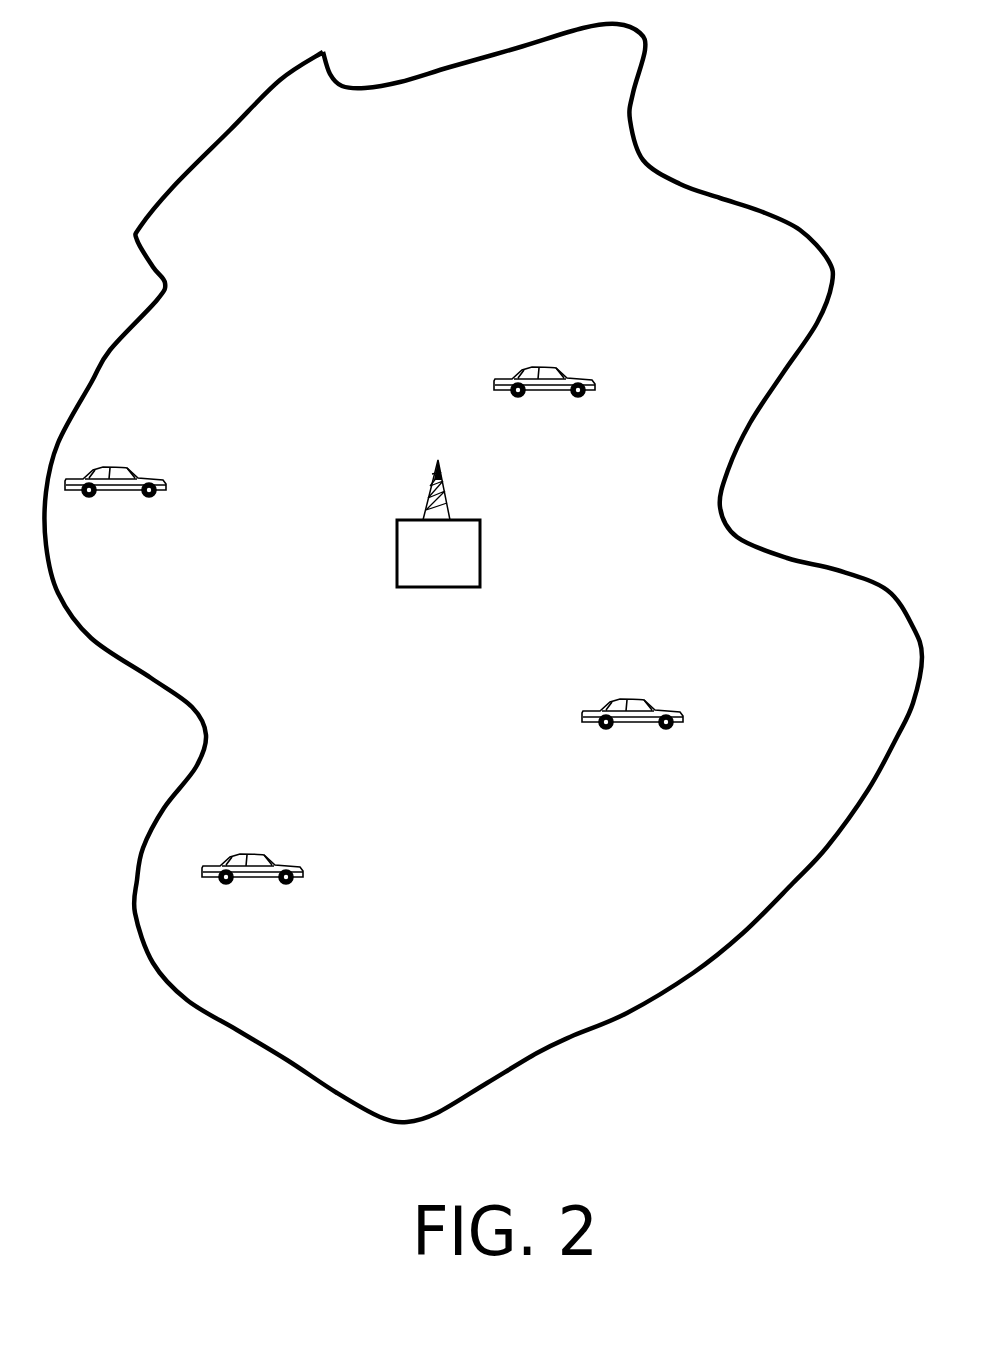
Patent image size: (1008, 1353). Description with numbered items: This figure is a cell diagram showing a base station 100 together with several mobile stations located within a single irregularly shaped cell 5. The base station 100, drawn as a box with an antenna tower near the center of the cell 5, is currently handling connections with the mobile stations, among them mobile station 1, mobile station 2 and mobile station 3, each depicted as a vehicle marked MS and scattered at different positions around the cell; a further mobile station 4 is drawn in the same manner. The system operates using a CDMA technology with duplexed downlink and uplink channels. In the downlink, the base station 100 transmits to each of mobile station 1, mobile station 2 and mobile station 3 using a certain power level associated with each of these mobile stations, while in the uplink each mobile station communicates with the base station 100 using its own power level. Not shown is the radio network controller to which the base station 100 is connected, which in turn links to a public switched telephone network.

The mobile station 1 is at (650, 699).
The mobile station 2 is at (268, 856).
The mobile station 3 is at (560, 367).
The mobile station MS 4 is at (135, 467).
The cell (service area boundary) 5 is at (793, 885).
The base station 100 is at (481, 538).